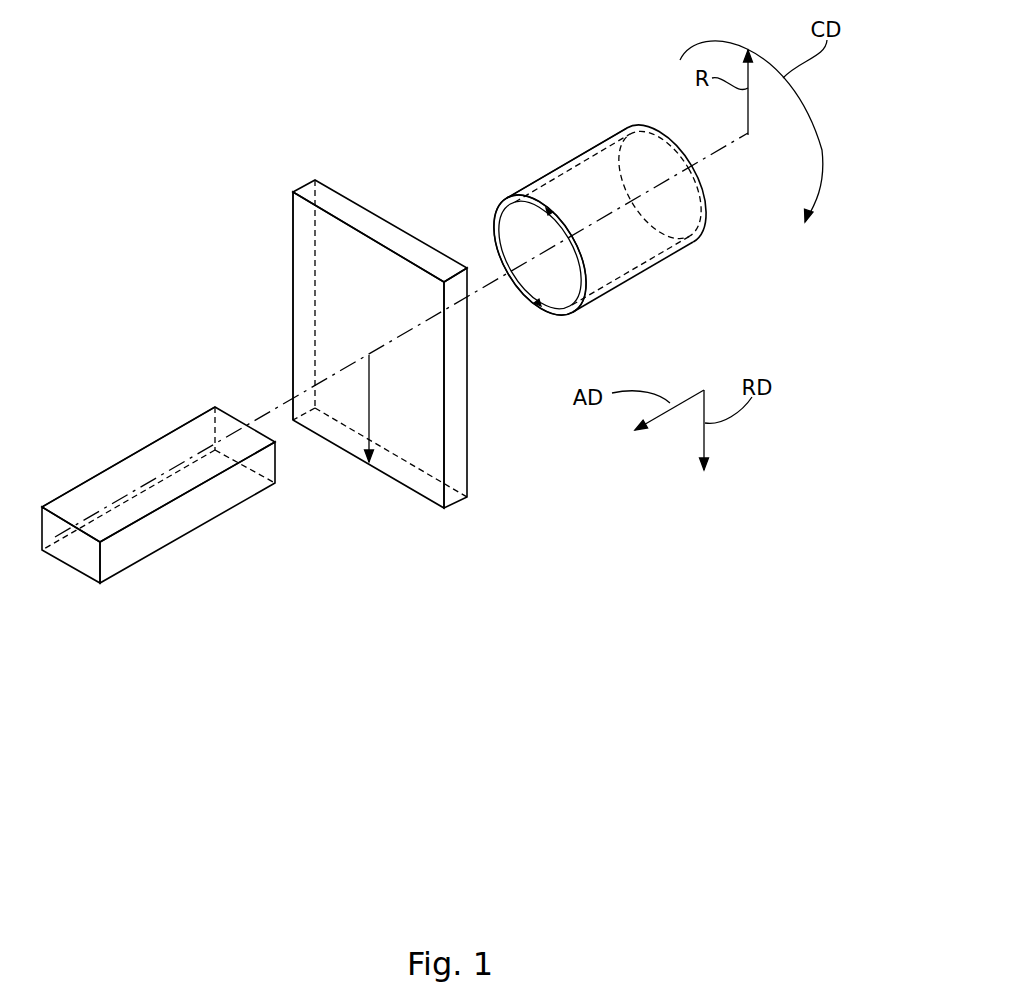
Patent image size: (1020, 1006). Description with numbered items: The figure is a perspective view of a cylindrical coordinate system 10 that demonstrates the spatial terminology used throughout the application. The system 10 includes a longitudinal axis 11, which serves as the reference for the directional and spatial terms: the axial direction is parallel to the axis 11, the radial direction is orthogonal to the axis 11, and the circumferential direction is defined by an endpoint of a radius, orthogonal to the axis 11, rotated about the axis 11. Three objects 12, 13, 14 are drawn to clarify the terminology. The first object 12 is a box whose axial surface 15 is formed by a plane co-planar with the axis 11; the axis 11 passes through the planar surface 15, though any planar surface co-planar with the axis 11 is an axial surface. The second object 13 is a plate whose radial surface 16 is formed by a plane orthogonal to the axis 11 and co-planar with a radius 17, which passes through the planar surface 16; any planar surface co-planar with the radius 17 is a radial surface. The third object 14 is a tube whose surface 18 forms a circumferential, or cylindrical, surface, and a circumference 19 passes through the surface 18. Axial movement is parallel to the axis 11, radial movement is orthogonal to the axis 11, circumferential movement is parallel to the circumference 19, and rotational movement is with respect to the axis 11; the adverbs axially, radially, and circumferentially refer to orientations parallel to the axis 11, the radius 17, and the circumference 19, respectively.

The cylindrical coordinate system 10 is at (250, 225).
The longitudinal axis 11 is at (688, 167).
The object 12 is at (127, 573).
The object 13 is at (477, 498).
The object 14 is at (617, 287).
The axial surface 15 is at (122, 477).
The radial surface 16 is at (307, 305).
The radius 17 is at (370, 400).
The circumferential surface 18 is at (563, 170).
The circumference 19 is at (493, 222).